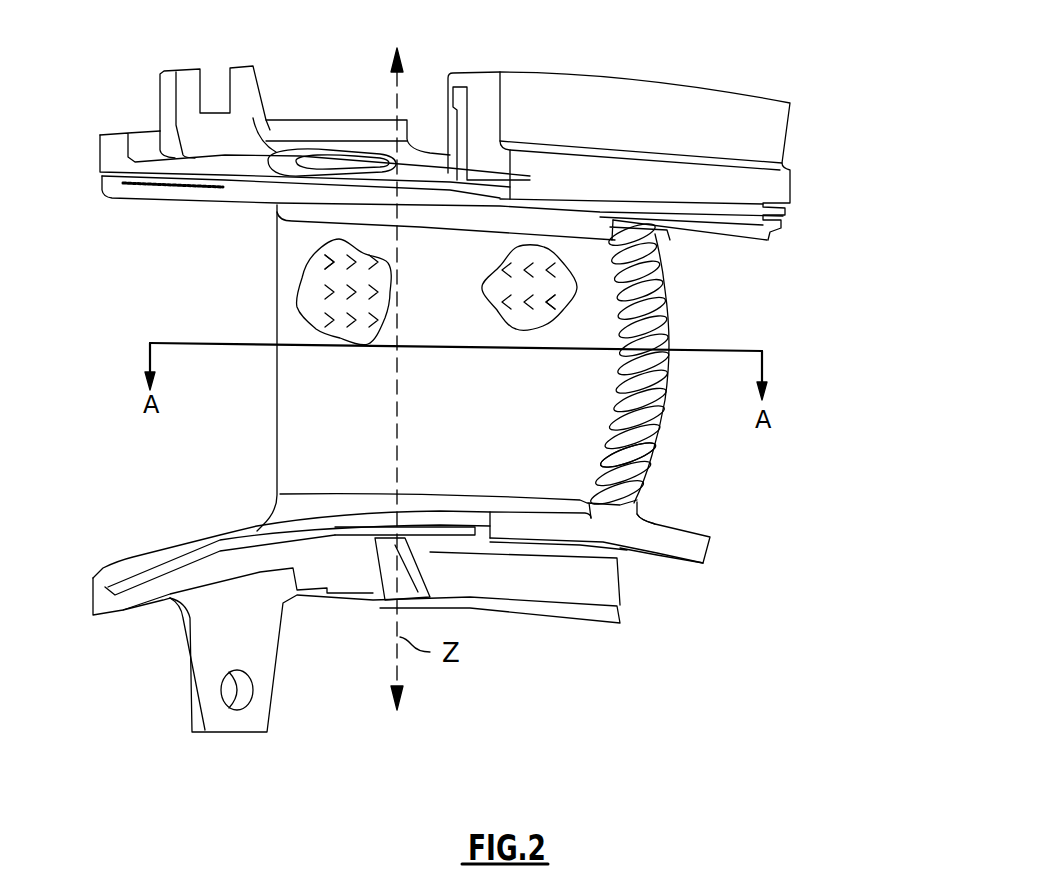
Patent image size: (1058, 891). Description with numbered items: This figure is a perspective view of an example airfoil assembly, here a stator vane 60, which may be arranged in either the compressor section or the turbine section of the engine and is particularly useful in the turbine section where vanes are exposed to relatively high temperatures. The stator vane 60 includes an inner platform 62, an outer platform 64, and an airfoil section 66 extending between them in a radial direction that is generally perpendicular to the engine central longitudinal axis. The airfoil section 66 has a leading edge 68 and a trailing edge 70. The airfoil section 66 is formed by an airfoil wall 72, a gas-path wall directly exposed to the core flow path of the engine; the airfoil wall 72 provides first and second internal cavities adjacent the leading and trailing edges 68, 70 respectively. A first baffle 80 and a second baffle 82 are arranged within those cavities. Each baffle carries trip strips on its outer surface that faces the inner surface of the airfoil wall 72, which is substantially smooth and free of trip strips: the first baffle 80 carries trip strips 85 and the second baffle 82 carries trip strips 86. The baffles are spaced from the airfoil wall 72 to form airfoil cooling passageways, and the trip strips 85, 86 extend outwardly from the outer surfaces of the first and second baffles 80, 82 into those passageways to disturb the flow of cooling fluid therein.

The stator vane 60 is at (833, 91).
The inner platform 62 is at (178, 553).
The outer platform 64 is at (223, 187).
The airfoil section 66 is at (274, 298).
The leading edge 68 is at (277, 410).
The trailing edge 70 is at (670, 311).
The airfoil wall 72 is at (483, 468).
The first baffle 80 is at (333, 307).
The second baffle 82 is at (513, 287).
The trip strips 85 is at (330, 260).
The trip strips 86 is at (553, 303).